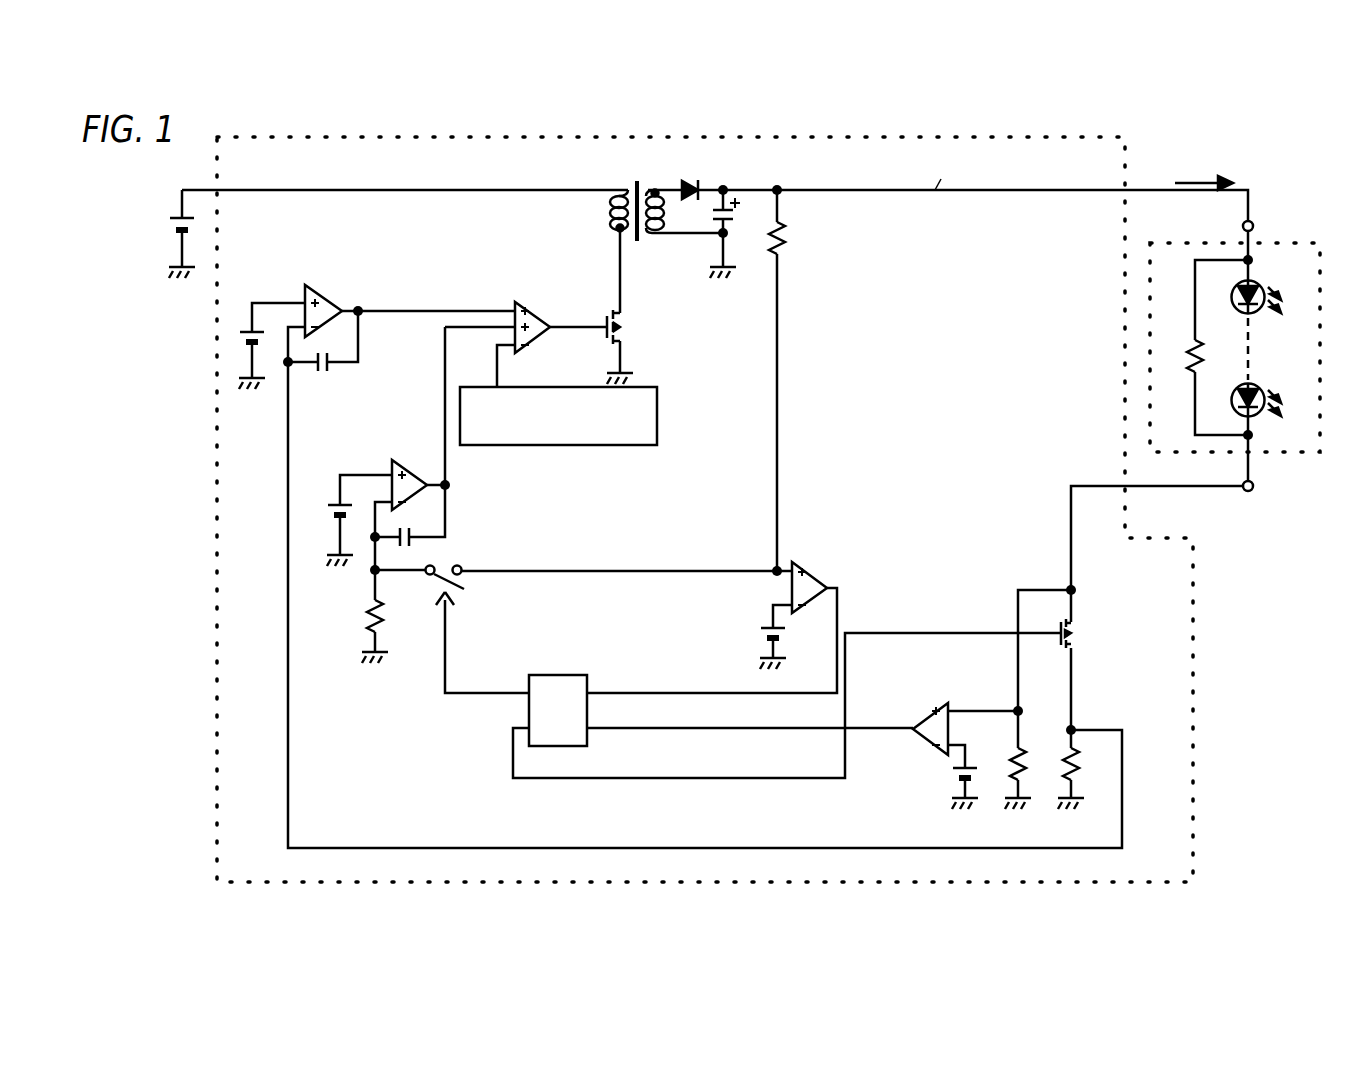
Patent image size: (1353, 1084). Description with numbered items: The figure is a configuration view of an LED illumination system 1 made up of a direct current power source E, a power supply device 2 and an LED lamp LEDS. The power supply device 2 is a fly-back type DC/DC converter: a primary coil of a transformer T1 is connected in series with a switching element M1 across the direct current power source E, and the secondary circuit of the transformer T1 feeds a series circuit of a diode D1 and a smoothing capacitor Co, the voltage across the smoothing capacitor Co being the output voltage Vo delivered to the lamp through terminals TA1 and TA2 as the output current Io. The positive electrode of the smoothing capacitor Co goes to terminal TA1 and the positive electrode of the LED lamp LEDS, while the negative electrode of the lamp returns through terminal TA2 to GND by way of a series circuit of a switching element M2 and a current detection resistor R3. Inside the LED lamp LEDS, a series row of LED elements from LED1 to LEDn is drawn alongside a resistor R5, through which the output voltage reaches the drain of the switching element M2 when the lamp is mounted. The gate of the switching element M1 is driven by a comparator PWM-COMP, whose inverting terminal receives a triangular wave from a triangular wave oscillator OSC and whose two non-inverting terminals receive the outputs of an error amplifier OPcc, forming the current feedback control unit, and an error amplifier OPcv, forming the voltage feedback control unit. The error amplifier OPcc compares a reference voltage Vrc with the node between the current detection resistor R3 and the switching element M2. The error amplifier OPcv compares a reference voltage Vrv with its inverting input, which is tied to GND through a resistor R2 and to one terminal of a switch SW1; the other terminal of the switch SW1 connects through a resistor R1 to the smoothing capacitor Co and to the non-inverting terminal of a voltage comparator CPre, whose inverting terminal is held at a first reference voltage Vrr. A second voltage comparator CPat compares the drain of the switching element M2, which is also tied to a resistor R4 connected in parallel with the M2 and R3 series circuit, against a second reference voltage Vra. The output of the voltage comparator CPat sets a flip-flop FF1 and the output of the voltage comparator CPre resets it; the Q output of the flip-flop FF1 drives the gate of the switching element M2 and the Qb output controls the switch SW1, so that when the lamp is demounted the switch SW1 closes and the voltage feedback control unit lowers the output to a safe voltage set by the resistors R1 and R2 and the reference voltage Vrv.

The LED illumination system 1 is at (724, 126).
The power supply device 2 is at (1193, 652).
The direct current power source E is at (172, 234).
The transformer T1 is at (666, 197).
The diode D1 is at (692, 176).
The smoothing capacitor Co is at (738, 231).
The resistor R1 is at (794, 378).
The output voltage Vo is at (949, 171).
The output current Io is at (1204, 171).
The terminal TA1 is at (1269, 217).
The terminal TA2 is at (1266, 498).
The LED lamp LEDS is at (1235, 333).
The first LED LED1 is at (1273, 284).
The n-th LED LEDn is at (1273, 388).
The resistor R5 is at (1204, 347).
The switching element M1 is at (632, 306).
The switching element M2 is at (1085, 657).
The resistor R2 is at (360, 616).
The current detection resistor R3 is at (1085, 767).
The resistor R4 is at (1025, 699).
The error amplifier OPcc is at (368, 301).
The error amplifier OPcv is at (372, 448).
The comparator PWM-COMP is at (526, 331).
The triangular wave oscillator OSC is at (558, 404).
The voltage comparator CPre is at (729, 567).
The voltage comparator CPat is at (944, 702).
The flip-flop FF1 is at (558, 697).
The switch SW1 is at (442, 581).
The reference voltage Vrc is at (242, 348).
The reference voltage Vrv is at (248, 509).
The first reference voltage Vrr is at (681, 624).
The second reference voltage Vra is at (856, 794).